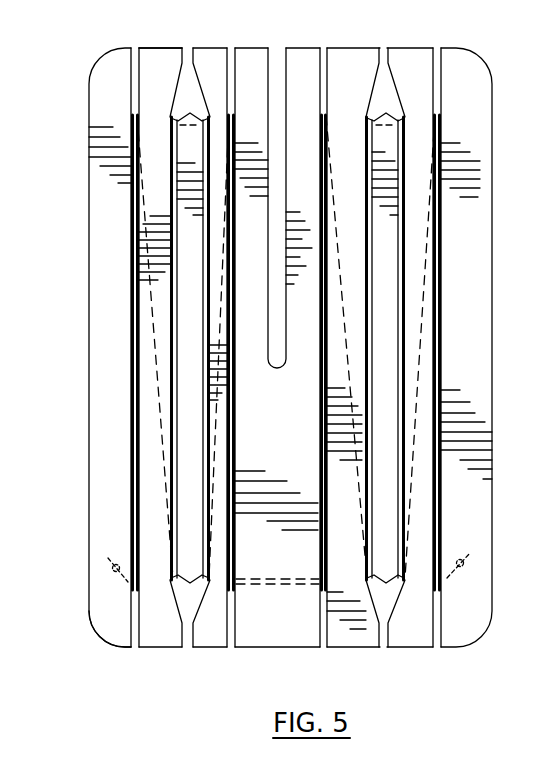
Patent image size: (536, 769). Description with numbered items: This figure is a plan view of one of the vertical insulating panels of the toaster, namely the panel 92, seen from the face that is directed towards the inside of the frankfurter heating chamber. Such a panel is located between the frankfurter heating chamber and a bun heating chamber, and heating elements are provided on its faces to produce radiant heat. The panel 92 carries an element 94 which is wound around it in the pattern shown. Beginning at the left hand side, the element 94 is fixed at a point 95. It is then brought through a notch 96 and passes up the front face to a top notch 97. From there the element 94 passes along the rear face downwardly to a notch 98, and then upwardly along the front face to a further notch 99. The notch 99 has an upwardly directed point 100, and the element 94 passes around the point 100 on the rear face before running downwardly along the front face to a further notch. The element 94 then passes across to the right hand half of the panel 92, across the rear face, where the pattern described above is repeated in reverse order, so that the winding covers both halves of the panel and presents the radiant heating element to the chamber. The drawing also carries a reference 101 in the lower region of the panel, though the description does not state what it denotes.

The vertical insulating panel 92 is at (89, 73).
The element 94 is at (131, 421).
The point 95 is at (108, 563).
The notch 96 is at (130, 625).
The top notch 97 is at (143, 70).
The notch 98 is at (180, 605).
The further notch 99 is at (180, 67).
The upwardly directed point 100 is at (207, 110).
The bond line 101 is at (236, 625).